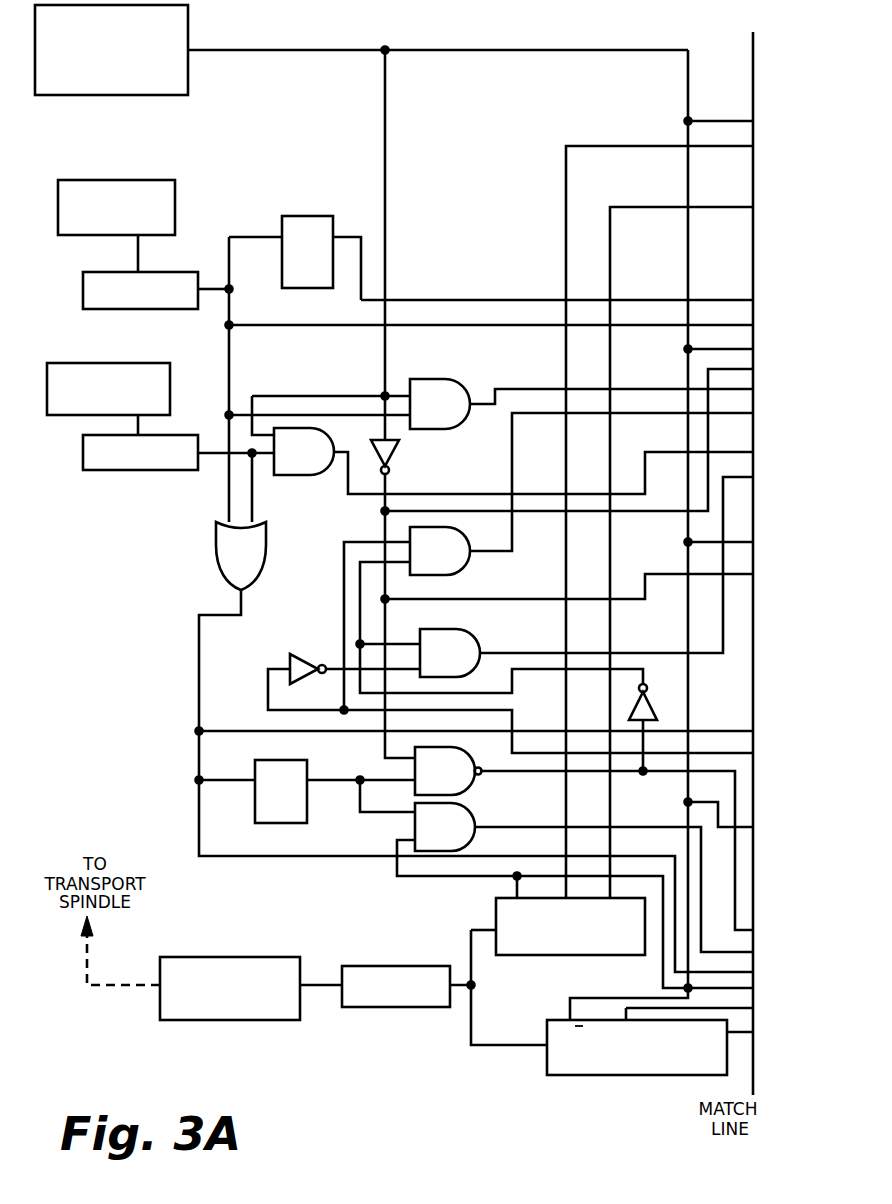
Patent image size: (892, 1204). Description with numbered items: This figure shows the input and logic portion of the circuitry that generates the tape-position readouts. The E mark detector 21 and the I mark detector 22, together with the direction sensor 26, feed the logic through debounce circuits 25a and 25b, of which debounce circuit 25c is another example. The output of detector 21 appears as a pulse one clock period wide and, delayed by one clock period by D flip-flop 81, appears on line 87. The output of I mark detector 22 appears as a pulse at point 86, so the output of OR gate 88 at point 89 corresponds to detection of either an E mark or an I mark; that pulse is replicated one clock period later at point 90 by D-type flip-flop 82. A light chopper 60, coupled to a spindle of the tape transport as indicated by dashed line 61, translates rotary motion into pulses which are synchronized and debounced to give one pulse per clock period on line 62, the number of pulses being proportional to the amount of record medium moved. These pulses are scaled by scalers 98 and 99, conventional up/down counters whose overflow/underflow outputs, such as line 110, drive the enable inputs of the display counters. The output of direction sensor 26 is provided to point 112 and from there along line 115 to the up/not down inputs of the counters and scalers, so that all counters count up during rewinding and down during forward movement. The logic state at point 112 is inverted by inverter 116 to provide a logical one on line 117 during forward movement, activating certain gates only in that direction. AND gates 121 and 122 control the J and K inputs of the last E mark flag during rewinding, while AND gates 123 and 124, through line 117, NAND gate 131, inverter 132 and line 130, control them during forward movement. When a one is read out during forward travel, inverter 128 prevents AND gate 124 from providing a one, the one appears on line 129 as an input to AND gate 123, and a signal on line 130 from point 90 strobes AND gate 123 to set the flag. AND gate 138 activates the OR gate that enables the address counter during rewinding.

The direction sensor 26 is at (72, 96).
The E mark detector 21 is at (128, 180).
The debounce circuit 25a is at (172, 309).
The I mark detector 22 is at (84, 363).
The debounce circuit 25b is at (152, 470).
The point 86 is at (253, 455).
The D flip-flop 81 is at (318, 216).
The line 87 is at (487, 299).
The point 112 is at (388, 31).
The line 115 is at (688, 72).
The line 110 is at (602, 146).
The AND gate 121 is at (452, 379).
The AND gate 122 is at (313, 476).
The inverter 116 is at (398, 448).
The line 117 is at (385, 525).
The AND gate 123 is at (468, 570).
The line 129 is at (344, 578).
The line 130 is at (587, 669).
The inverter 128 is at (300, 653).
The AND gate 124 is at (478, 640).
The OR gate 88 is at (215, 555).
The point 89 is at (199, 731).
The D-type flip-flop 82 is at (277, 760).
The point 90 is at (362, 778).
The NAND gate 131 is at (468, 760).
The inverter 132 is at (655, 706).
The AND gate 138 is at (475, 812).
The scaler 98 is at (532, 955).
The scaler 99 is at (580, 1075).
The line 62 is at (460, 978).
The debounce circuit 25c is at (382, 966).
The light chopper 60 is at (247, 957).
The dashed line 61 is at (116, 990).